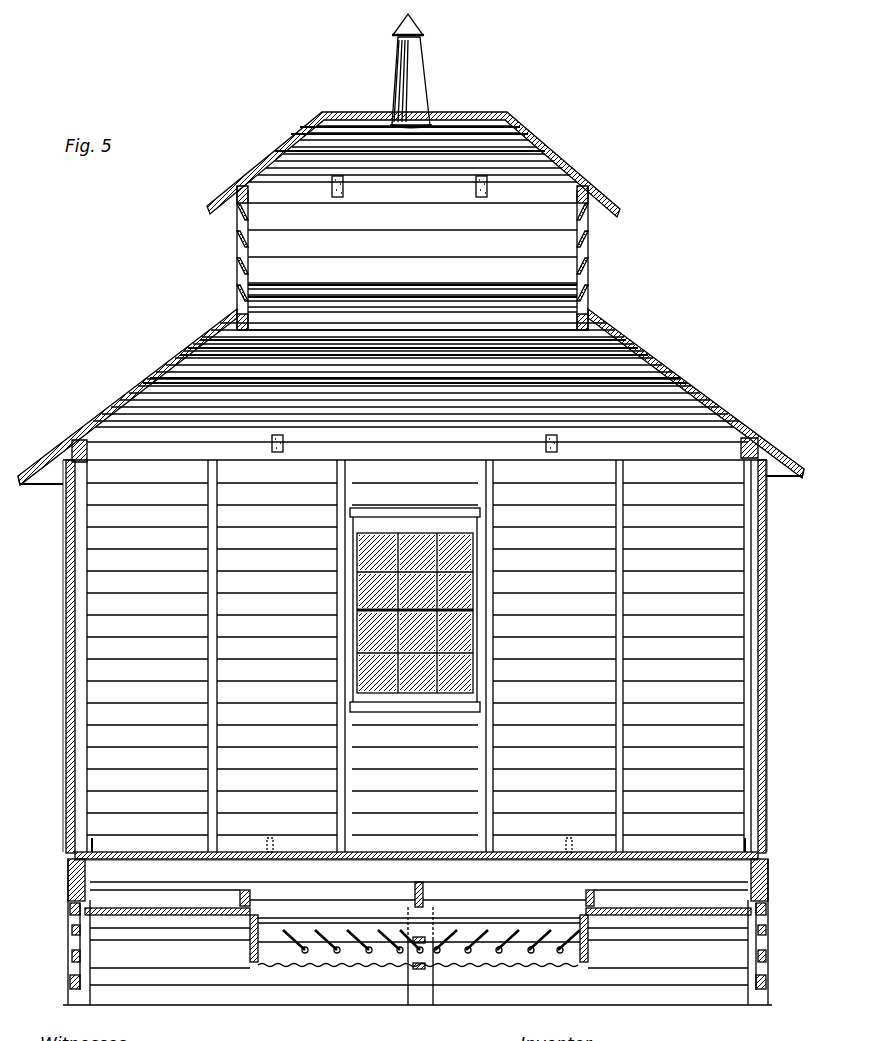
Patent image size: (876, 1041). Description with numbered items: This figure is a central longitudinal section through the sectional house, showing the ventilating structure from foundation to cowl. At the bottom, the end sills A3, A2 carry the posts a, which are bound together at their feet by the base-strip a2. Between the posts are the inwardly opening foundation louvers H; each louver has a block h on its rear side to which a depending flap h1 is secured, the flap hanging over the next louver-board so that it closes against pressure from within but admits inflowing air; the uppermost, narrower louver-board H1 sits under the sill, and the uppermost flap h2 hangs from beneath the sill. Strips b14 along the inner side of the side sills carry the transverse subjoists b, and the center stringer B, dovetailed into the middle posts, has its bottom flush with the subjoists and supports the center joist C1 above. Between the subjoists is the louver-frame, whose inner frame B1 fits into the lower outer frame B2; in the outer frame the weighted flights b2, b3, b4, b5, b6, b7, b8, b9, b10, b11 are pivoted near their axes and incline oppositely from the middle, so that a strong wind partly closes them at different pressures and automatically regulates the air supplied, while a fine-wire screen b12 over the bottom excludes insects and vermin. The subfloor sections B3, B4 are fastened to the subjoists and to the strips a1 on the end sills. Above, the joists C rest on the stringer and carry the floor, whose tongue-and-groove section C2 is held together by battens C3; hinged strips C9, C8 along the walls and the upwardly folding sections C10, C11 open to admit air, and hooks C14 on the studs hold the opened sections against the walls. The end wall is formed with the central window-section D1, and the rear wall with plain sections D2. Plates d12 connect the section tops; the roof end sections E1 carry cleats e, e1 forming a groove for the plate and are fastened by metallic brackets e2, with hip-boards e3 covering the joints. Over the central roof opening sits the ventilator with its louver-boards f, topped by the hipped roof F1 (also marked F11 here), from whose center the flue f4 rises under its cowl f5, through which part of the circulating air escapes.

The cowl f5 is at (424, 26).
The flue f4 is at (429, 62).
The cupola roof F11 is at (540, 140).
The ventilator roof F1 is at (591, 245).
The louver-board f is at (238, 258).
The roof end section E1 is at (155, 380).
The hip-board e3 is at (188, 353).
The cleat e1 is at (120, 438).
The plate d12 is at (90, 408).
The cleat e is at (55, 468).
The metallic bracket e2 is at (86, 450).
The window-section D1 is at (66, 686).
The plain section D2 is at (408, 615).
The post a is at (85, 581).
The strip a1 is at (215, 581).
The joist C is at (160, 850).
The hinged floor strip C9 is at (73, 845).
The hook C14 is at (95, 845).
The upwardly-folding section C10 is at (276, 852).
The upwardly-folding section C11 is at (556, 855).
The center joist C1 is at (298, 856).
The floor section C2 is at (664, 852).
The hinged floor strip C8 is at (750, 852).
The batten C3 is at (250, 862).
The end sill A3 is at (70, 872).
The end sill A2 is at (770, 870).
The base-strip a2 is at (67, 1002).
The uppermost louver-board H1 is at (70, 906).
The block h is at (77, 930).
The louver H is at (75, 962).
The uppermost flap h2 is at (92, 902).
The flap h1 is at (88, 932).
The subjoist b is at (243, 900).
The strip b14 is at (155, 898).
The inner frame B1 is at (252, 929).
The outer frame B2 is at (247, 950).
The subfloor section B3 is at (167, 913).
The subfloor section B4 is at (673, 915).
The fine-wire screen b12 is at (250, 963).
The stringer B is at (420, 880).
The louver-board b2 is at (302, 953).
The louver-board b3 is at (334, 953).
The louver-board b4 is at (366, 953).
The louver-board b5 is at (397, 953).
The louver-board b6 is at (418, 953).
The louver-board b7 is at (562, 953).
The louver-board b8 is at (532, 953).
The louver-board b9 is at (500, 953).
The louver-board b10 is at (470, 953).
The louver-board b11 is at (440, 953).